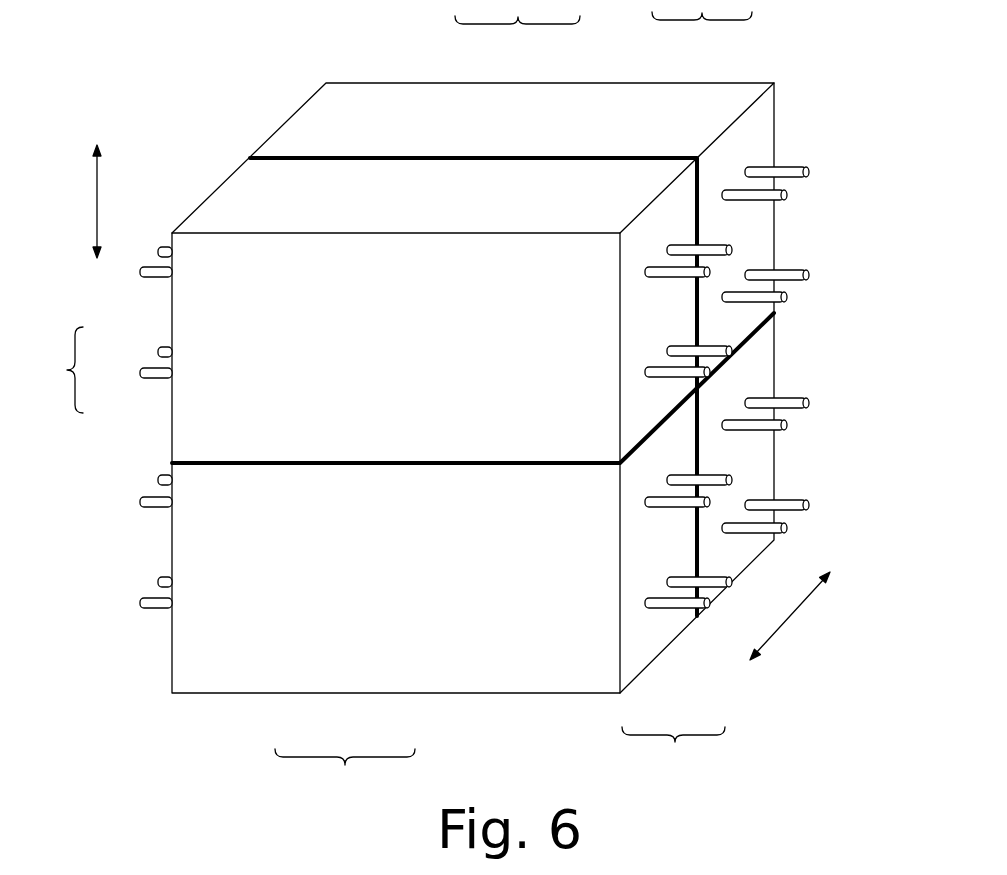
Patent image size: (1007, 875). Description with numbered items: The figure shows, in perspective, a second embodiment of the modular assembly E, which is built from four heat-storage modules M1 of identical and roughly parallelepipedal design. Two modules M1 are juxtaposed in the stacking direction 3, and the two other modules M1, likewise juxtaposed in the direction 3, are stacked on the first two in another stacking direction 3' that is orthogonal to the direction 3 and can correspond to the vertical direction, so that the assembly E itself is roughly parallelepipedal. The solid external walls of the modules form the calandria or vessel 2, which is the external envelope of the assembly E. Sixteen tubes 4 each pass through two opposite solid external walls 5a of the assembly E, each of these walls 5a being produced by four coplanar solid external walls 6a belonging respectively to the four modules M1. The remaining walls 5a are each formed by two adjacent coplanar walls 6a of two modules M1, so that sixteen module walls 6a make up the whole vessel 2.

The modular assembly E is at (449, 396).
The vessel 2 is at (185, 222).
The stacking direction 3 is at (802, 620).
The another stacking direction 3' is at (74, 201).
The tubes 4 is at (790, 170).
The solid external walls of the assembly 5a is at (60, 372).
The solid external walls of a module 6a is at (446, 178).
The heat-storage module M1 is at (355, 107).